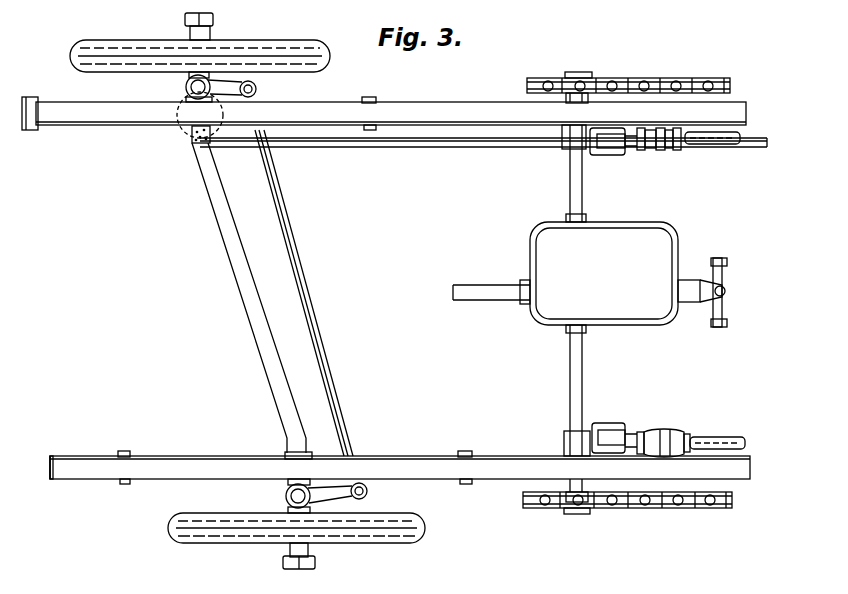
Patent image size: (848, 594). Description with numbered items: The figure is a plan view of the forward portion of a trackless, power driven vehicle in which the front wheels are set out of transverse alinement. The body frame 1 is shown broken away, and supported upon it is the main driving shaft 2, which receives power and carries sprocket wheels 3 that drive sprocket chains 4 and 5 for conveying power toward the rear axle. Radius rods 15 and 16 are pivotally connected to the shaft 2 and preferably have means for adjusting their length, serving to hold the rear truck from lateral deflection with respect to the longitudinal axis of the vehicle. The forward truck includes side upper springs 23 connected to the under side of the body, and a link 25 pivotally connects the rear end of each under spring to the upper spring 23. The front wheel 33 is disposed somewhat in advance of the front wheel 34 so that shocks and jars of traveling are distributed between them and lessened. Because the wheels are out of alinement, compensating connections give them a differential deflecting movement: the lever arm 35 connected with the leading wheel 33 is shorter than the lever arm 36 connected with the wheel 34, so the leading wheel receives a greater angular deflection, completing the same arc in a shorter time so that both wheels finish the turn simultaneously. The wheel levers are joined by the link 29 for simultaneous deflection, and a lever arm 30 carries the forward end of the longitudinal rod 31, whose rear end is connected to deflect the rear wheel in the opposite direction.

The body frame 1 is at (137, 115).
The main driving shaft 2 is at (571, 178).
The sprocket wheels 3 is at (570, 78).
The sprocket chain 4 is at (666, 508).
The sprocket chain 5 is at (680, 80).
The radius rod 15 is at (716, 148).
The radius rod 16 is at (722, 444).
The side upper spring 23 is at (42, 126).
The link 25 is at (383, 90).
The link 29 is at (288, 204).
The lever arm 30 is at (190, 140).
The longitudinal rod 31 is at (332, 143).
The front wheel 33 is at (322, 65).
The front wheel 34 is at (380, 540).
The lever arm 35 is at (256, 82).
The lever arm 36 is at (366, 494).